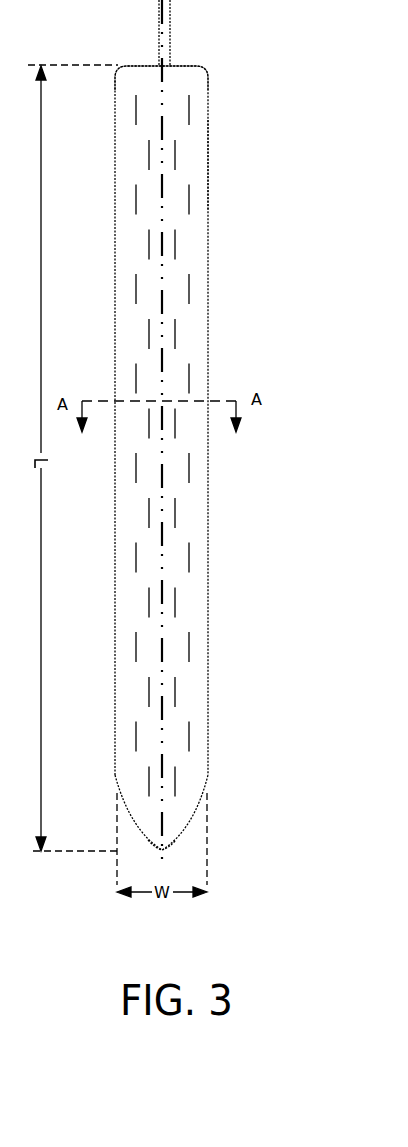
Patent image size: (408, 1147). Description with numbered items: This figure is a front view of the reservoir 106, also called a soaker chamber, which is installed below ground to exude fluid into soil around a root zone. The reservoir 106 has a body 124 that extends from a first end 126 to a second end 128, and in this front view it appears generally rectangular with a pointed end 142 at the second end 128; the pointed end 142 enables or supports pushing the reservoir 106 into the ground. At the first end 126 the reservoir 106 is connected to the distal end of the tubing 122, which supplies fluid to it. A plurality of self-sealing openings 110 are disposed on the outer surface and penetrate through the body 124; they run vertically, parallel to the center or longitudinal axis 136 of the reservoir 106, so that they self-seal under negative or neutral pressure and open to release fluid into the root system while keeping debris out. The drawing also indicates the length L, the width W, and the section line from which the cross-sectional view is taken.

The reservoir 106 is at (262, 332).
The self-sealing openings 110 is at (205, 550).
The tubing 122 is at (170, 40).
The body 124 is at (206, 165).
The first end 126 is at (235, 78).
The second end 128 is at (222, 803).
The longitudinal axis 136 is at (162, 243).
The pointed end 142 is at (226, 843).